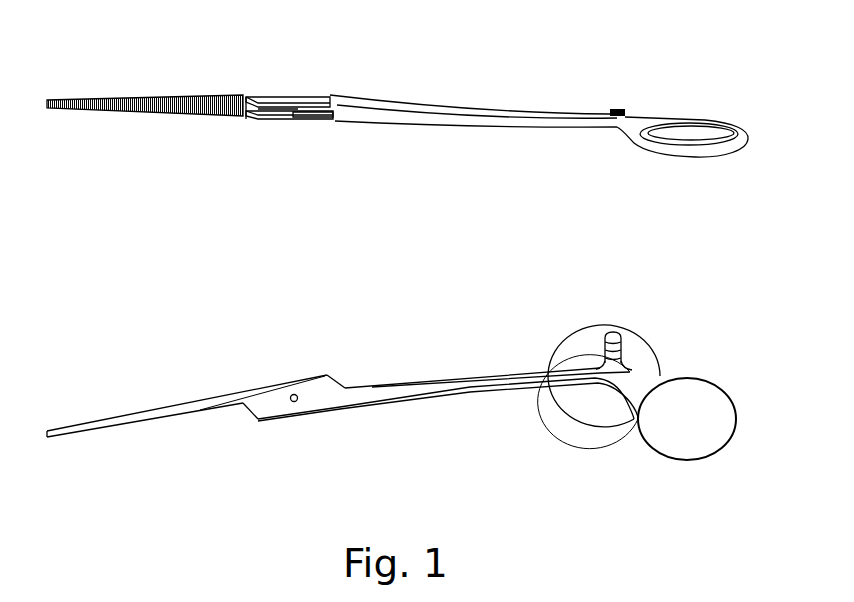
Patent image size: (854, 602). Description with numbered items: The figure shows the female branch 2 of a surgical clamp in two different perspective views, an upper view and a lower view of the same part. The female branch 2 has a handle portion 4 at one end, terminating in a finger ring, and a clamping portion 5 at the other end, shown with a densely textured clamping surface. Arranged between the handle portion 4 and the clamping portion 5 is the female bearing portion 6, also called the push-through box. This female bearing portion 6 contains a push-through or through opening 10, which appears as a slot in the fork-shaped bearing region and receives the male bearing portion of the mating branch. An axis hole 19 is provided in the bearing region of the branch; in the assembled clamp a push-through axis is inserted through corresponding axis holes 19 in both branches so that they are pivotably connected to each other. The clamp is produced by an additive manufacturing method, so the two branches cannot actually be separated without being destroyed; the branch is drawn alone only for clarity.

The female branch 2 is at (586, 64).
The handle portion 4 is at (747, 147).
The clamping portion 5 is at (242, 127).
The female bearing portion 6 is at (335, 78).
The through opening 10 is at (287, 130).
The axis hole 19 is at (302, 100).